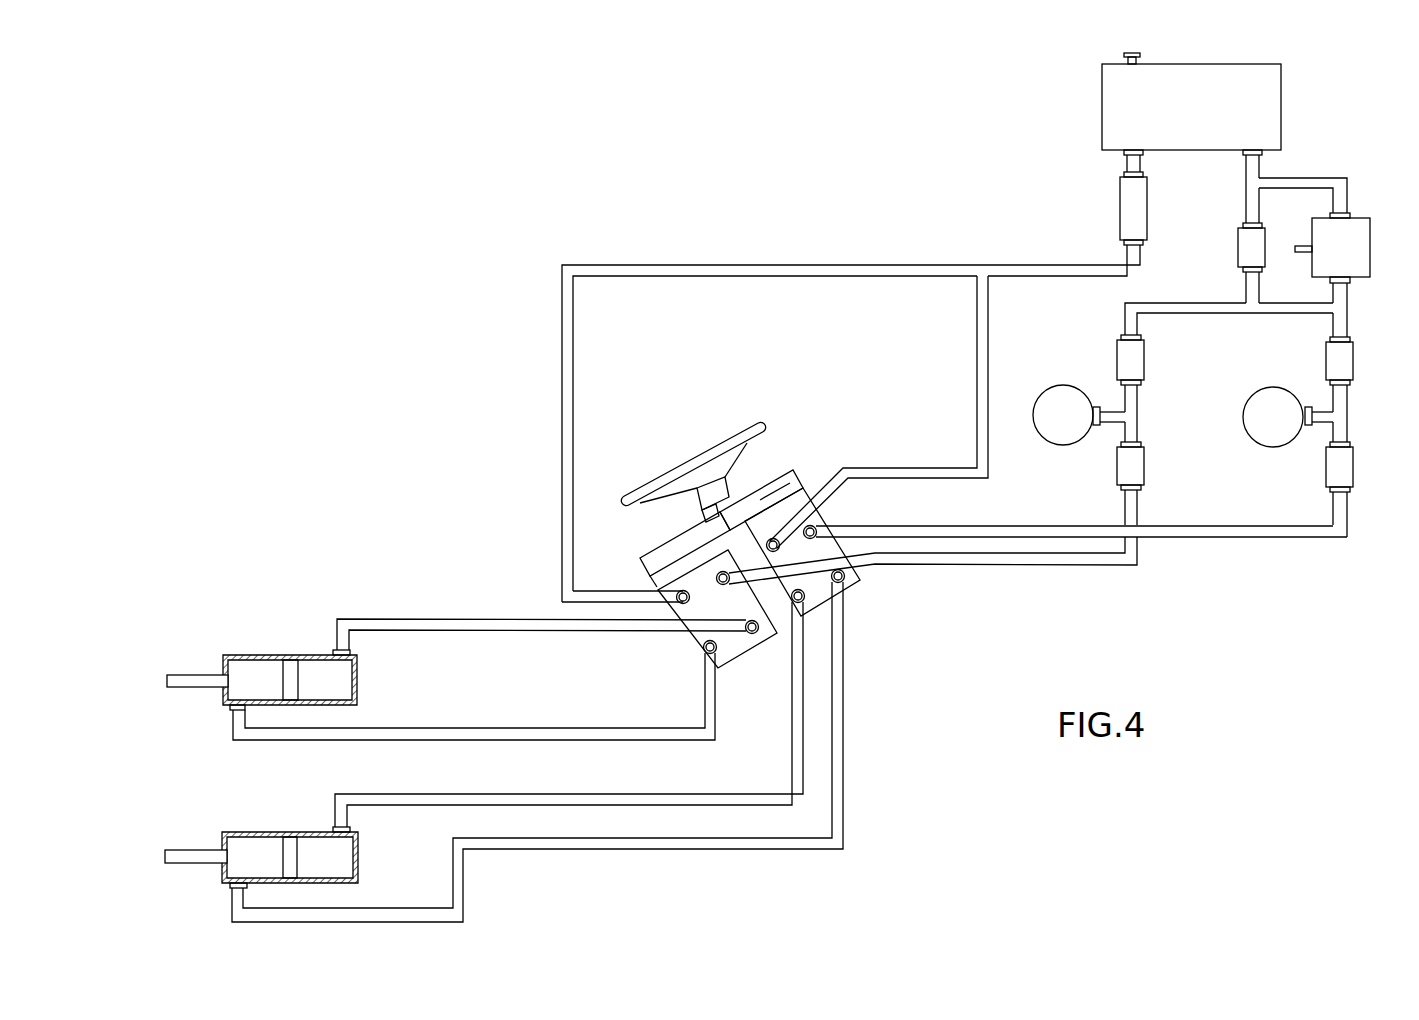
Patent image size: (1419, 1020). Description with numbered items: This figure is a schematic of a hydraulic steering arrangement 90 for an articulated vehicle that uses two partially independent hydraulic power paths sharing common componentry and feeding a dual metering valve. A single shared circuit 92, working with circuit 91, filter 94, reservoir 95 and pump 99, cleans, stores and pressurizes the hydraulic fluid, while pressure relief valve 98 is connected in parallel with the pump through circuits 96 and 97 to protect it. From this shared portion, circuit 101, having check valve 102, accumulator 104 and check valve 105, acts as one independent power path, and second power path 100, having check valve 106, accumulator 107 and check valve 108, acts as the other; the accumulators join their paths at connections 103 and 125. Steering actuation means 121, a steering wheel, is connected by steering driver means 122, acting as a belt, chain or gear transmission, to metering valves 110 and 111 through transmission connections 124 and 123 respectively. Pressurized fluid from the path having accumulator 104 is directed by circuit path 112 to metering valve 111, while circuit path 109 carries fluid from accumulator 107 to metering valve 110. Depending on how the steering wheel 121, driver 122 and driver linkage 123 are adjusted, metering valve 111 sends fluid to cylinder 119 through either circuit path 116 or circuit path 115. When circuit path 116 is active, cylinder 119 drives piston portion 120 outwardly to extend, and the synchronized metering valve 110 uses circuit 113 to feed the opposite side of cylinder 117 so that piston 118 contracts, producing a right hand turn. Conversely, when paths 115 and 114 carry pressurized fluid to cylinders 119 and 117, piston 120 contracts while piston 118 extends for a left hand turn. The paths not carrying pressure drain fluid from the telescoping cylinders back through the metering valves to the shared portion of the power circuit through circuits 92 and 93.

The hydraulic steering system 90 is at (715, 245).
The circuit 91 is at (1050, 268).
The circuit 92 is at (846, 272).
The circuit 93 is at (983, 347).
The filter 94 is at (1128, 203).
The reservoir 95 is at (1272, 87).
The circuit 96 is at (1303, 183).
The circuit 97 is at (1247, 203).
The pressure relief valve 98 is at (1255, 247).
The pump 99 is at (1360, 250).
The second power path 100 is at (1340, 312).
The circuit 101 is at (1185, 308).
The check valve 102 is at (1120, 358).
The tee fitting 103 is at (1130, 415).
The accumulator 104 is at (1067, 430).
The check valve 105 is at (1135, 467).
The check valve 106 is at (1332, 360).
The accumulator 107 is at (1270, 402).
The check valve 108 is at (1335, 467).
The circuit path 109 is at (1273, 533).
The metering valve 110 is at (862, 582).
The metering valve 111 is at (737, 645).
The circuit path 112 is at (1060, 560).
The circuit 113 is at (845, 712).
The path 114 is at (798, 753).
The circuit path 115 is at (710, 698).
The circuit path 116 is at (622, 632).
The cylinder 117 is at (297, 838).
The piston 118 is at (287, 850).
The cylinder 119 is at (291, 712).
The piston portion 120 is at (292, 690).
The steering actuation means 121 is at (668, 475).
The steering driver means 122 is at (658, 548).
The transmission connection 123 is at (655, 584).
The transmission connection 124 is at (778, 513).
The tee fitting 125 is at (1340, 430).